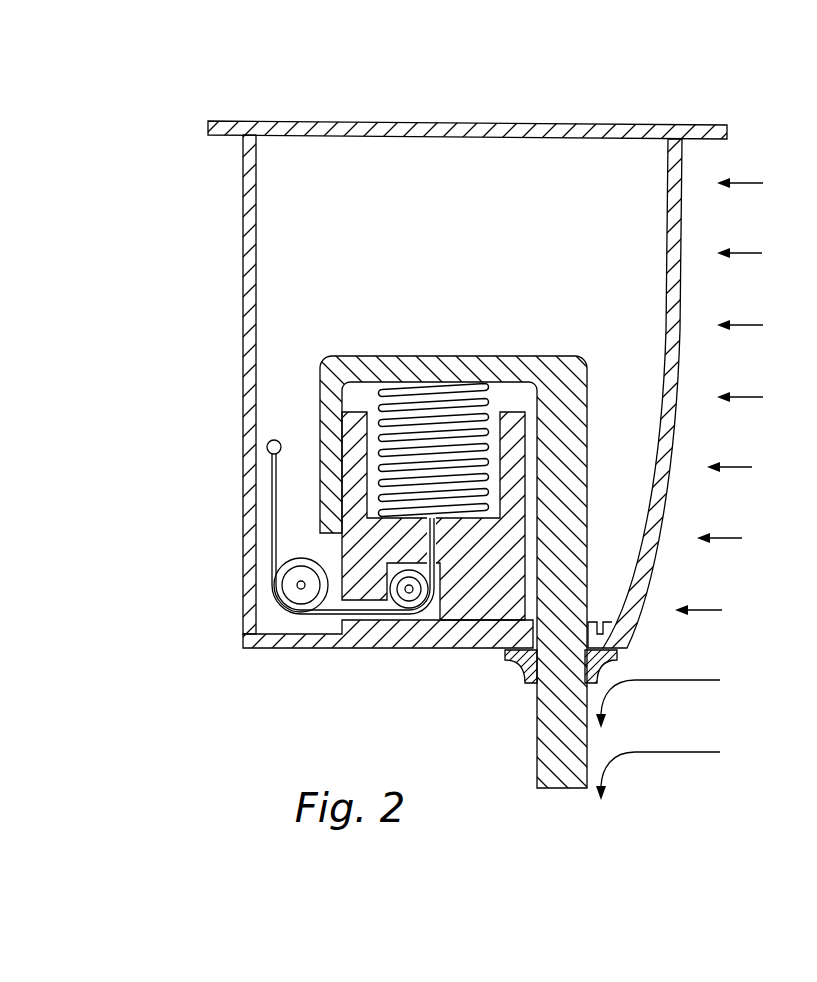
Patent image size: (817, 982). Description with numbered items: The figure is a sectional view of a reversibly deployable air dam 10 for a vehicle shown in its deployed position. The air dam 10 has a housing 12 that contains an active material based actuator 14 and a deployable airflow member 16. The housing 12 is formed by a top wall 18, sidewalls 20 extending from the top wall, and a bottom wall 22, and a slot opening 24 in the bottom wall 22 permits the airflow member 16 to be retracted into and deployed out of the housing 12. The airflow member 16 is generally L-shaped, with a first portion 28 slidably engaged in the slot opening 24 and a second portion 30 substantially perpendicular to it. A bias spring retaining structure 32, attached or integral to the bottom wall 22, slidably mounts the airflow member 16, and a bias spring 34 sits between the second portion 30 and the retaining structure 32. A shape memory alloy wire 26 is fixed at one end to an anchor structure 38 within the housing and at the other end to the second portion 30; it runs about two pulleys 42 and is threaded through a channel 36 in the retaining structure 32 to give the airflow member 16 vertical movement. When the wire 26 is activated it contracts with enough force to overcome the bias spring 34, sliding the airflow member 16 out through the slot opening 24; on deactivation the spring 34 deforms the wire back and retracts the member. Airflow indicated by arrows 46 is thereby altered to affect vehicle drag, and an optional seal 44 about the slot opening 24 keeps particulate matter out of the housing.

The air dam 10 is at (338, 94).
The housing 12 is at (234, 366).
The active material based actuator 14 is at (297, 405).
The deployable airflow member 16 is at (609, 392).
The top wall 18 is at (548, 123).
The sidewalls 20 is at (243, 248).
The bottom wall 22 is at (287, 648).
The slot opening 24 is at (582, 637).
The shape memory alloy wire 26 is at (275, 512).
The first portion 28 is at (587, 527).
The second portion 30 is at (472, 353).
The bias spring retaining structure 32 is at (513, 407).
The bias spring 34 is at (422, 407).
The channel 36 is at (373, 618).
The anchor structure 38 is at (267, 447).
The pulleys 42 is at (296, 584).
The seal 44 is at (512, 658).
The arrows 46 is at (677, 682).